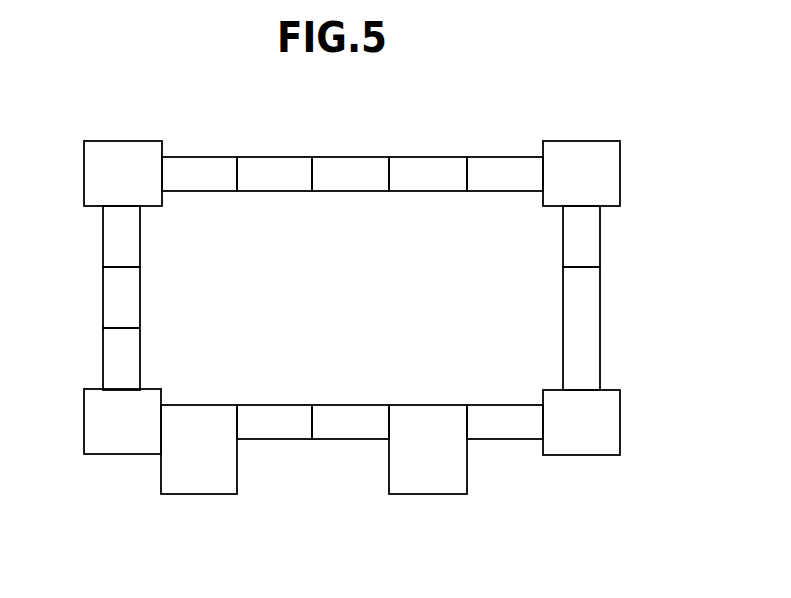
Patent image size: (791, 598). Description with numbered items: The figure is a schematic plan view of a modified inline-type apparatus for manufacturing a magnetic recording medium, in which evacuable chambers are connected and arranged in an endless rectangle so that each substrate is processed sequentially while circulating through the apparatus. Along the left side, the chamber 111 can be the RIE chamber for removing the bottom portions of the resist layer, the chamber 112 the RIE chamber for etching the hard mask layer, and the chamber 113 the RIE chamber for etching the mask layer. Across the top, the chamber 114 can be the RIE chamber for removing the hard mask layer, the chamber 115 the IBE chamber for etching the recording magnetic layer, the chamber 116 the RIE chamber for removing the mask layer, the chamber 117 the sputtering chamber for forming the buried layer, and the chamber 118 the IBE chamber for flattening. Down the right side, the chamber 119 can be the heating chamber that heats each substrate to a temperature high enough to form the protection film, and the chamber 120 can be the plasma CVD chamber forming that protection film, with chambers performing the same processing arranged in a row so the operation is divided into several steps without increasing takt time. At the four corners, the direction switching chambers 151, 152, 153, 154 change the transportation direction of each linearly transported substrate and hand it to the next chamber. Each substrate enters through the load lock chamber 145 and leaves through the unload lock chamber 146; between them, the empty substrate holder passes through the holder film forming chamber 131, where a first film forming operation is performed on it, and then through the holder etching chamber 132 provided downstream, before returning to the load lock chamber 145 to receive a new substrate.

The direction switching chamber 152 is at (117, 141).
The direction switching chamber 153 is at (582, 141).
The direction switching chamber 151 is at (130, 454).
The direction switching chamber 154 is at (656, 412).
The RIE chamber 114 is at (203, 157).
The IBE chamber 115 is at (278, 157).
The RIE chamber 116 is at (353, 157).
The sputtering chamber 117 is at (430, 157).
The IBE chamber 118 is at (508, 157).
The RIE chamber 113 is at (103, 240).
The RIE chamber 112 is at (103, 297).
The RIE chamber 111 is at (103, 353).
The heating chamber 119 is at (600, 240).
The plasma CVD chamber 120 is at (600, 348).
The load lock chamber 145 is at (197, 405).
The unload lock chamber 146 is at (432, 405).
The holder etching chamber 132 is at (270, 405).
The holder film forming chamber 131 is at (347, 405).